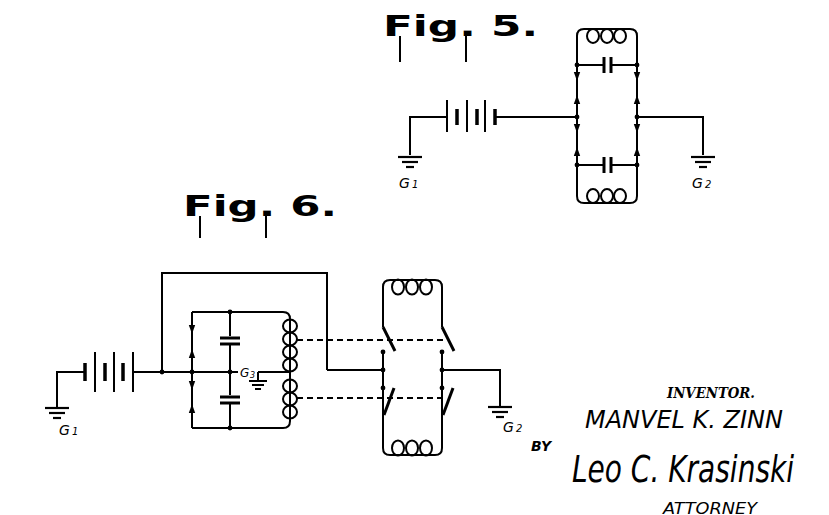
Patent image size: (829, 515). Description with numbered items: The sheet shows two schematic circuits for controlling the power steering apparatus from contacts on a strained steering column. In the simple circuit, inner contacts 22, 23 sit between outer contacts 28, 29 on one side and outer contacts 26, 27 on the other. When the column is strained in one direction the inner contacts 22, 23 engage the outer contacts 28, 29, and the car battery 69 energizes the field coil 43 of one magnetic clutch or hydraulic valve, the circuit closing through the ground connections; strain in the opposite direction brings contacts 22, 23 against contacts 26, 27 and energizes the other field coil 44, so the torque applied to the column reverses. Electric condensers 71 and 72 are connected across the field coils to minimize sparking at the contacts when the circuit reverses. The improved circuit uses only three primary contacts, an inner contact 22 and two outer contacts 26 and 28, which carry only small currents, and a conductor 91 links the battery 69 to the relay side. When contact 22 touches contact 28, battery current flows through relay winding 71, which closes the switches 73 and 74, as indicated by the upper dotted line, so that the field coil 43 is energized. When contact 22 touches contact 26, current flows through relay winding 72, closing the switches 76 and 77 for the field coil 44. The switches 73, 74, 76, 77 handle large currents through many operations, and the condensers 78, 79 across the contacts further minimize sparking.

In FIG. 5, the inner contact 22 is at (566, 114).
In FIG. 6, the inner contact 22 is at (203, 369).
In FIG. 5, the inner contact 23 is at (648, 114).
In FIG. 5, the outer contact 26 is at (566, 157).
In FIG. 6, the outer contact 26 is at (236, 415).
In FIG. 5, the outer contact 27 is at (648, 157).
In FIG. 5, the outer contact 28 is at (566, 69).
In FIG. 6, the outer contact 28 is at (236, 323).
In FIG. 5, the outer contact 29 is at (648, 69).
In FIG. 5, the field coil 43 is at (607, 36).
In FIG. 6, the field coil 43 is at (412, 294).
In FIG. 5, the field coil 44 is at (607, 194).
In FIG. 6, the field coil 44 is at (412, 447).
In FIG. 5, the car battery 69 is at (471, 127).
In FIG. 6, the car battery 69 is at (109, 381).
In FIG. 5, the electric condenser / relay winding 71 is at (607, 78).
In FIG. 6, the electric condenser / relay winding 71 is at (301, 342).
In FIG. 5, the electric condenser / relay winding 72 is at (607, 156).
In FIG. 6, the electric condenser / relay winding 72 is at (301, 400).
In FIG. 6, the switch 73 is at (379, 337).
In FIG. 6, the switch 74 is at (455, 337).
In FIG. 6, the switch 76 is at (379, 404).
In FIG. 6, the switch 77 is at (455, 404).
In FIG. 6, the condenser 78 is at (241, 342).
In FIG. 6, the condenser 79 is at (241, 402).
In FIG. 6, the conductor 91 is at (244, 313).